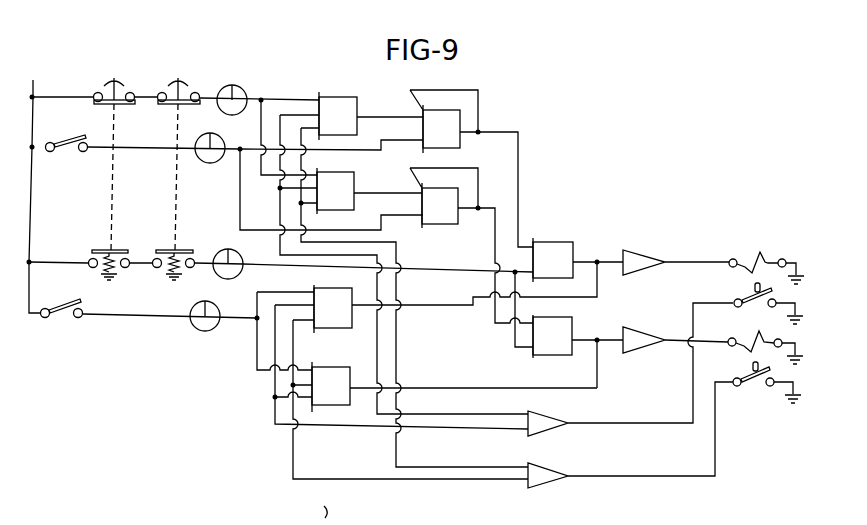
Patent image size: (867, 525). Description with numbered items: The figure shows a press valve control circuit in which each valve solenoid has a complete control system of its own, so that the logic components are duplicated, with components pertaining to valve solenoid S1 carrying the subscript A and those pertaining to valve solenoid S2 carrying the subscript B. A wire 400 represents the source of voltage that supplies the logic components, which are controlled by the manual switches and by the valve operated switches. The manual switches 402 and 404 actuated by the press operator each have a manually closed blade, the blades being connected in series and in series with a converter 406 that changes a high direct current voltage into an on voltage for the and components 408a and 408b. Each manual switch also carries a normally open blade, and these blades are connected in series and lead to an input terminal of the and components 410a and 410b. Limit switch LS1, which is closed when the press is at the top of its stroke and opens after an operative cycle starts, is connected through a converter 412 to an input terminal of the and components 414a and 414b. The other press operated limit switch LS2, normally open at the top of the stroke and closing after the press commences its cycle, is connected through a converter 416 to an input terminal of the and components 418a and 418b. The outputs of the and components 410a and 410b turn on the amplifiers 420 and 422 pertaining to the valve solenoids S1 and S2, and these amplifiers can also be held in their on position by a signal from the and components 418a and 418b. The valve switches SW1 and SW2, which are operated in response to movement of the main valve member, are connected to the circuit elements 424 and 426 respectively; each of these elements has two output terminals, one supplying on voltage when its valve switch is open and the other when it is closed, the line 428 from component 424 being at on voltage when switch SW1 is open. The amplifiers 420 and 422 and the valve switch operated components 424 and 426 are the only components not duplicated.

The wire 400 is at (56, 75).
The manual switch 402 is at (112, 167).
The manual switch 404 is at (177, 167).
The converter 406 is at (234, 86).
The and component 408a is at (330, 100).
The and component 408b is at (343, 182).
The and component 410a is at (578, 239).
The and component 410b is at (553, 352).
The converter 412 is at (222, 155).
The and component 414a is at (462, 138).
The and component 414b is at (460, 216).
The converter 416 is at (207, 331).
The and component 418a is at (330, 298).
The and component 418b is at (333, 375).
The amplifier 420 is at (641, 262).
The amplifier 422 is at (630, 340).
The circuit element 424 is at (549, 427).
The circuit element 426 is at (549, 478).
The line 428 is at (305, 513).
The limit switch LS1 is at (58, 152).
The limit switch LS2 is at (66, 304).
The valve solenoid S1 is at (769, 250).
The valve solenoid S2 is at (745, 339).
The valve switch SW1 is at (752, 296).
The valve switch SW2 is at (752, 386).